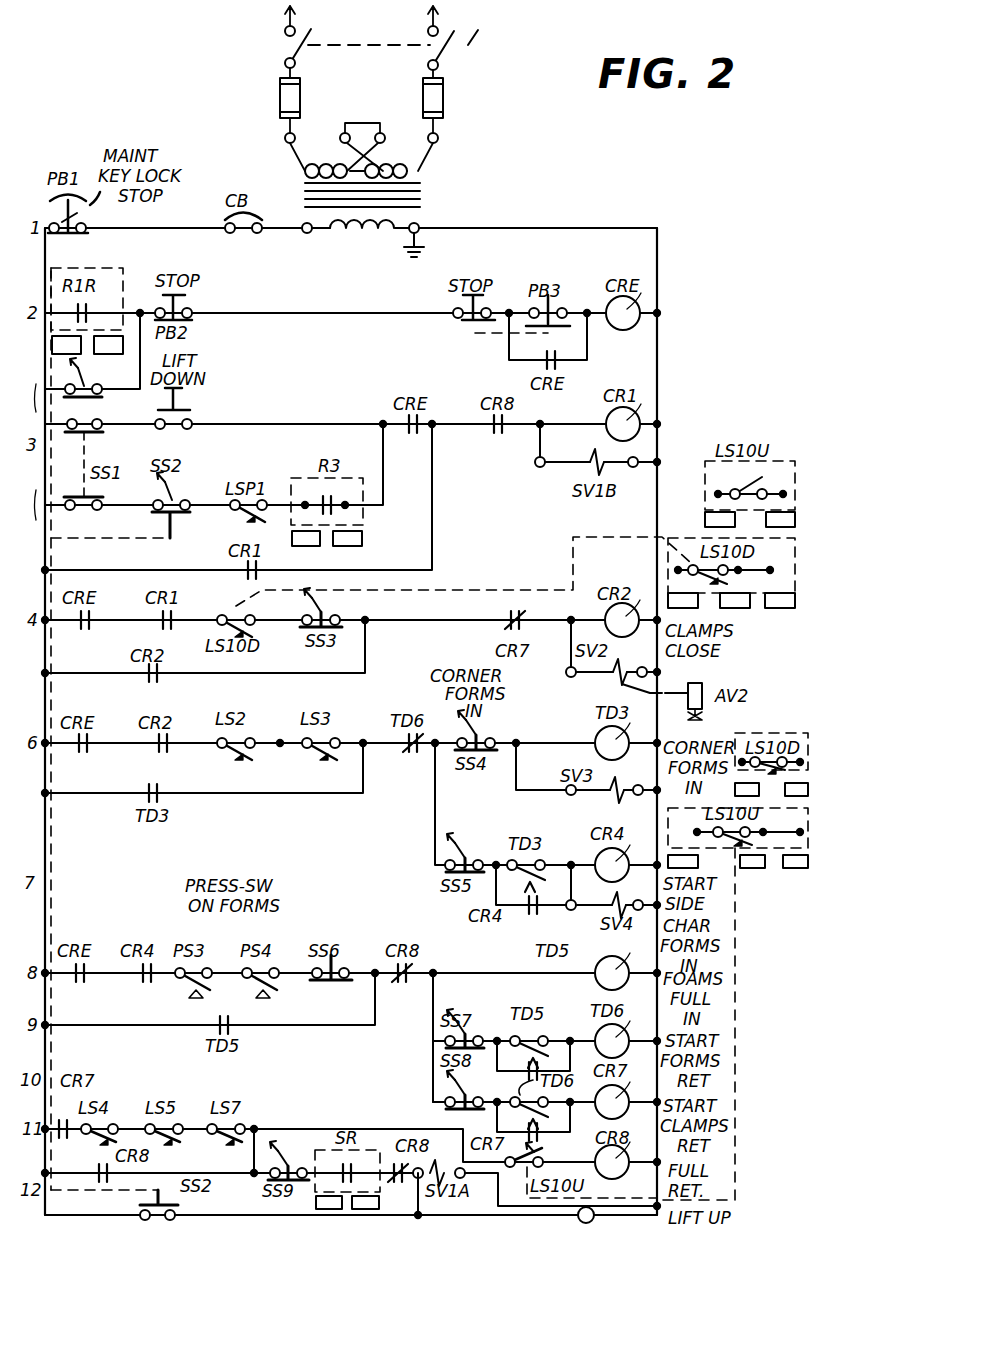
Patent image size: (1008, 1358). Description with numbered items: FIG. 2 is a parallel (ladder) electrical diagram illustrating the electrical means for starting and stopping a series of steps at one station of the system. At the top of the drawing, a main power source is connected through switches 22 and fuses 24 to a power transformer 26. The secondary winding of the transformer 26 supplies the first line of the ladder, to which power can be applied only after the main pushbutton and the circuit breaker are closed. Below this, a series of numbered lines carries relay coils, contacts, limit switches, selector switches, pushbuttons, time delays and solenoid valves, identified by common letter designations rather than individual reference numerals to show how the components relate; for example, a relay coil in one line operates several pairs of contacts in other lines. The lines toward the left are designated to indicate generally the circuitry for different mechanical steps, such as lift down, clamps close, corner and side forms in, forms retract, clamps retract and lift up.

The switches 22 is at (430, 50).
The fuses 24 is at (280, 93).
The power transformer 26 is at (436, 175).